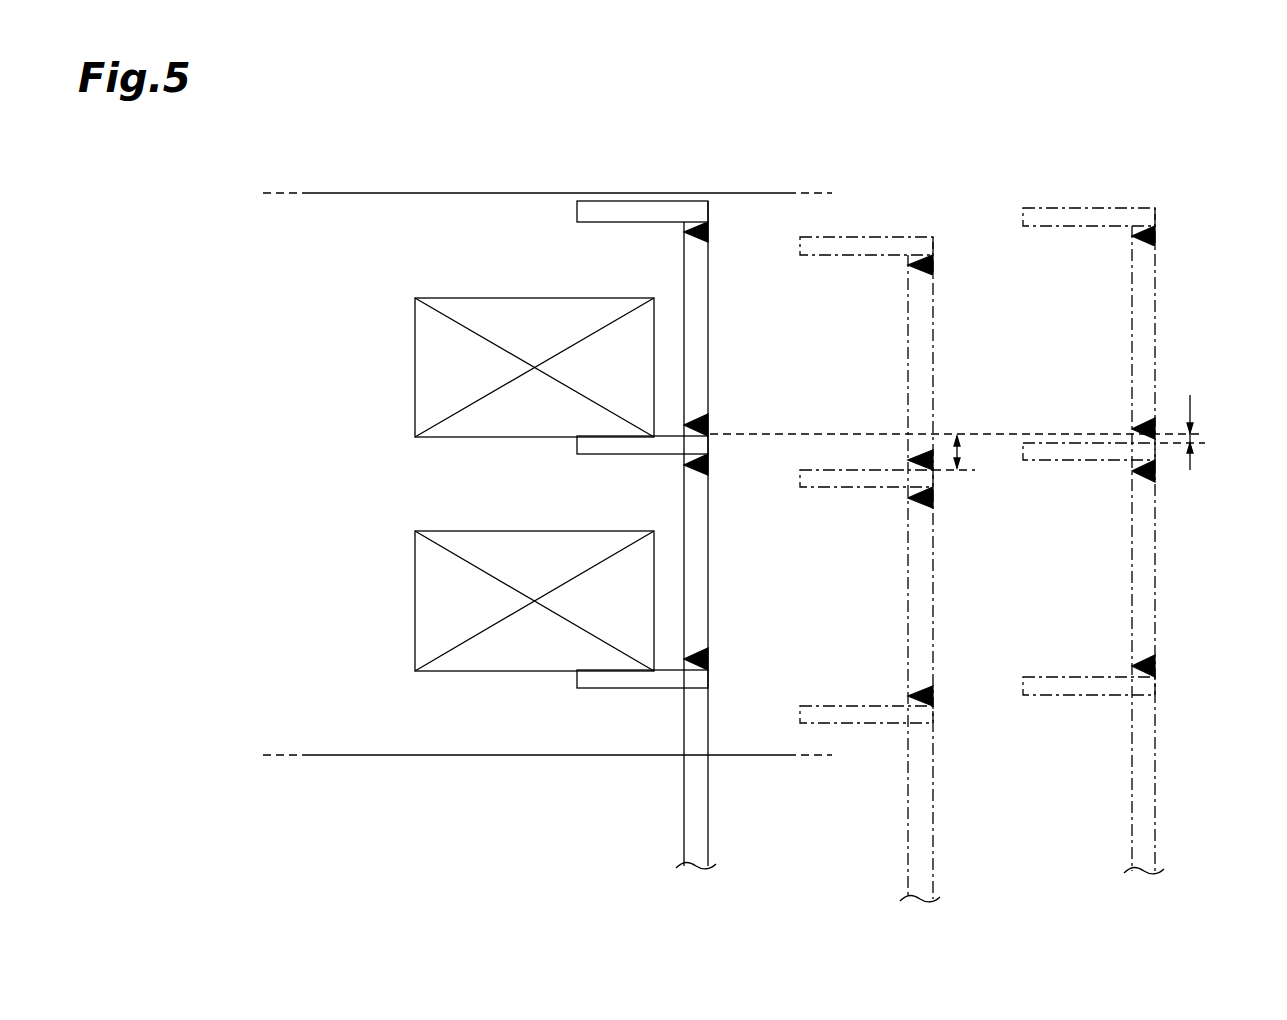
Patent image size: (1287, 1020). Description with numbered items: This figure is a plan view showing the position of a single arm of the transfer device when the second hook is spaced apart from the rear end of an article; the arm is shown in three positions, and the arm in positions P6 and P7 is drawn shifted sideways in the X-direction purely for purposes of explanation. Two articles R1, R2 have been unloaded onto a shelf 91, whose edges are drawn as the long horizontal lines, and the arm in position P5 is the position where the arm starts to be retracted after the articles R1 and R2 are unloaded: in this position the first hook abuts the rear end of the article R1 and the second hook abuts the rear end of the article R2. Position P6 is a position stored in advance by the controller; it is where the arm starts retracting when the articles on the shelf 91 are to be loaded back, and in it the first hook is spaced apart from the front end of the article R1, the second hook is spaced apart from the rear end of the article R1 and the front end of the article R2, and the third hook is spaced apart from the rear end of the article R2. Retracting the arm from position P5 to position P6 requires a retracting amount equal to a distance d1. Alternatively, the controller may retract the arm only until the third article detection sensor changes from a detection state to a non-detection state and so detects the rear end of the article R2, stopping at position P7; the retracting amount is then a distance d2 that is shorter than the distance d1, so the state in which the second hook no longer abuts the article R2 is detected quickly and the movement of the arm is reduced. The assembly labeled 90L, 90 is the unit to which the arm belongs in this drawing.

The left conveying unit 90L is at (555, 110).
The conveying unit 90 is at (547, 397).
The shelf 91 is at (374, 207).
The article R2 is at (418, 364).
The article R1 is at (418, 604).
The position P5 is at (649, 196).
The position P6 is at (868, 233).
The position P7 is at (1105, 195).
The distance d1 is at (972, 452).
The distance d2 is at (1204, 432).